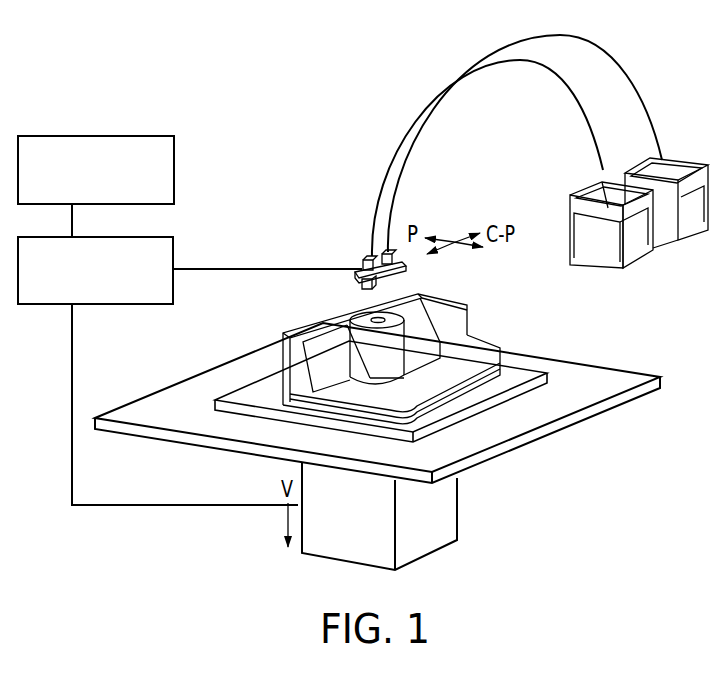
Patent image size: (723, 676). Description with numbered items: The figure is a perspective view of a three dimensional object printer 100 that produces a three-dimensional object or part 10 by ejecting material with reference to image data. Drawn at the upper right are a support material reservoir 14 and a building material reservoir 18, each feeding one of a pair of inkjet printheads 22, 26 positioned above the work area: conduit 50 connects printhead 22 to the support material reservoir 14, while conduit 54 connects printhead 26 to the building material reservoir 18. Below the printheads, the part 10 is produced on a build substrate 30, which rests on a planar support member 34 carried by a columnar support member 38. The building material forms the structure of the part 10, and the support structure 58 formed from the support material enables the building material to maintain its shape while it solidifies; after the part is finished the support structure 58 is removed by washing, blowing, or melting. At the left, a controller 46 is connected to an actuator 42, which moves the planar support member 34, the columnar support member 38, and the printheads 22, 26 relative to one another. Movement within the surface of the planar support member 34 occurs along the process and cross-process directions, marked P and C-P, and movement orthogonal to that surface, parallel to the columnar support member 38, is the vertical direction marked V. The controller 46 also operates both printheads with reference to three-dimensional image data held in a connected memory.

The printer 100 is at (312, 107).
The part 10 is at (458, 362).
The support material reservoir 14 is at (637, 242).
The building material reservoir 18 is at (686, 240).
The inkjet printhead 22 is at (349, 283).
The inkjet printhead 26 is at (410, 277).
The build substrate 30 is at (473, 407).
The planar support member 34 is at (512, 458).
The columnar support member 38 is at (456, 532).
The actuator 42 is at (174, 247).
The controller 46 is at (175, 171).
The conduit 50 is at (586, 128).
The conduit 54 is at (620, 78).
The support structure 58 is at (456, 337).